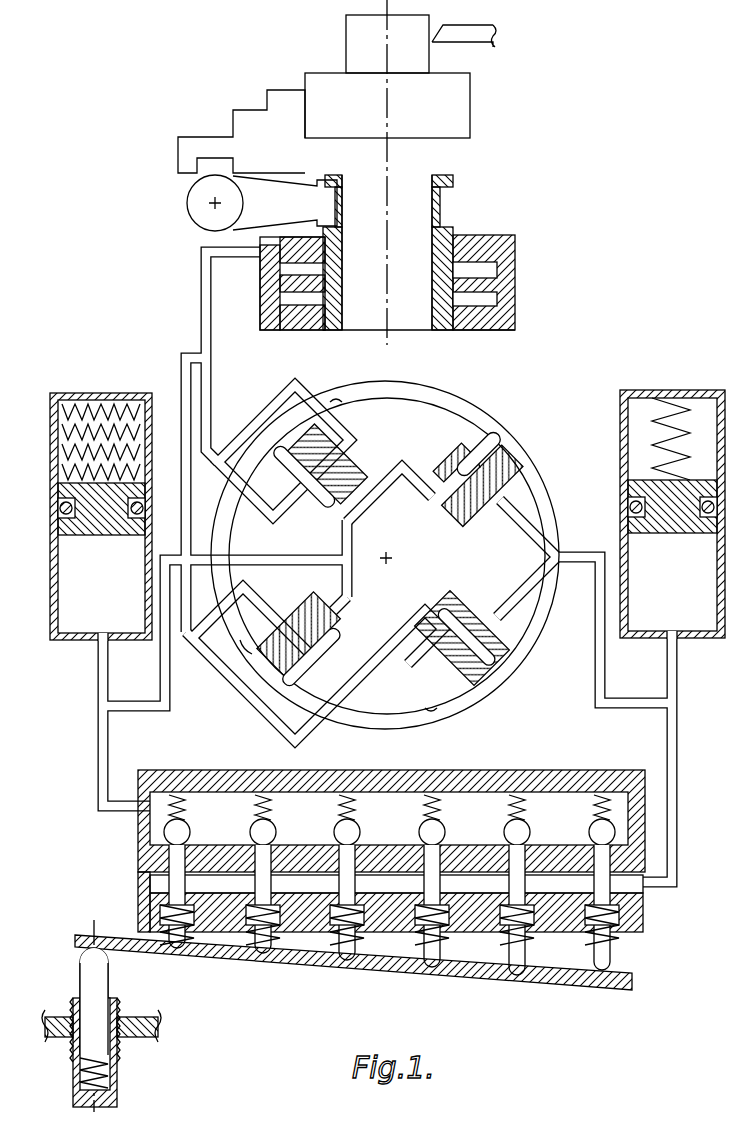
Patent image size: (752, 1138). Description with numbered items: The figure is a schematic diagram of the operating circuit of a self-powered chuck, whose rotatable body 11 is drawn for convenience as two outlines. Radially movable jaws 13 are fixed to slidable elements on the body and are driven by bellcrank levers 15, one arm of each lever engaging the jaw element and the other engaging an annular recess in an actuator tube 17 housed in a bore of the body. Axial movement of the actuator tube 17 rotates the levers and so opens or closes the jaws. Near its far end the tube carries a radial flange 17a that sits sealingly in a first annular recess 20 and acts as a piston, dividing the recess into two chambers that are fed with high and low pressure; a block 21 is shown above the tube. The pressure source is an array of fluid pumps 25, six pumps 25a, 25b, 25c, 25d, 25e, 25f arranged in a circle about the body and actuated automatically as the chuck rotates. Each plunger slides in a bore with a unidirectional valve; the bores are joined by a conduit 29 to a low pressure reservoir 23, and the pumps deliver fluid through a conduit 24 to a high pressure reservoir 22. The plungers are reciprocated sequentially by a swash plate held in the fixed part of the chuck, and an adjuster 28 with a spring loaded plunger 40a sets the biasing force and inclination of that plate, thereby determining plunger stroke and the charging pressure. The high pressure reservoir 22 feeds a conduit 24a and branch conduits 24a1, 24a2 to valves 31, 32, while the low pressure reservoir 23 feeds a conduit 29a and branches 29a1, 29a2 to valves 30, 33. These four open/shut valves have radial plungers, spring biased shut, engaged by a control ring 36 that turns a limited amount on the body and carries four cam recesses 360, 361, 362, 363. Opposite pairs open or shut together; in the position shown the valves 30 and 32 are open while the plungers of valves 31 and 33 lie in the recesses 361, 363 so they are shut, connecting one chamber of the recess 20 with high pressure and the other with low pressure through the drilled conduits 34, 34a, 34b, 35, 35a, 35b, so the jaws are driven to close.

The rotatable body 11 is at (490, 240).
The radially movable jaws 13 is at (255, 132).
The bellcrank lever 15 is at (220, 186).
The actuator tube 17 is at (443, 230).
The radial flange 17a is at (487, 290).
The first annular recess 20 is at (472, 312).
The drive block 21 is at (457, 107).
The high pressure reservoir 22 is at (92, 606).
The low pressure reservoir 23 is at (680, 607).
The conduit 24 is at (103, 727).
The conduit 24a is at (132, 707).
The branch conduit 24a1 is at (398, 596).
The branch conduit 24a2 is at (380, 540).
The array of fluid pumps 25 is at (152, 890).
The pump 25a is at (180, 920).
The pump 25b is at (265, 908).
The pump 25c is at (350, 905).
The pump 25d is at (433, 905).
The pump 25e is at (520, 905).
The pump 25f is at (610, 900).
The adjuster 28 is at (118, 1093).
The conduit 29 is at (672, 798).
The conduit 29a is at (642, 702).
The branch conduit 29a1 is at (503, 613).
The branch conduit 29a2 is at (505, 512).
The valve 30 is at (440, 655).
The valve 31 is at (315, 660).
The valve 32 is at (320, 470).
The valve 33 is at (455, 475).
The conduit 34 is at (185, 377).
The conduit 34a is at (300, 722).
The conduit 34b is at (258, 603).
The conduit 35 is at (203, 282).
The conduit 35a is at (250, 490).
The conduit 35b is at (257, 423).
The control ring 36 is at (398, 713).
The recess 360 is at (455, 697).
The recess 361 is at (258, 652).
The recess 362 is at (330, 400).
The recess 363 is at (508, 460).
The spring loaded plunger 40a is at (100, 963).